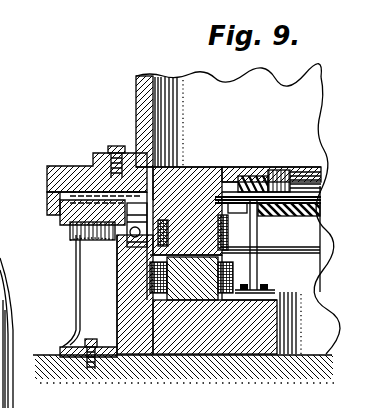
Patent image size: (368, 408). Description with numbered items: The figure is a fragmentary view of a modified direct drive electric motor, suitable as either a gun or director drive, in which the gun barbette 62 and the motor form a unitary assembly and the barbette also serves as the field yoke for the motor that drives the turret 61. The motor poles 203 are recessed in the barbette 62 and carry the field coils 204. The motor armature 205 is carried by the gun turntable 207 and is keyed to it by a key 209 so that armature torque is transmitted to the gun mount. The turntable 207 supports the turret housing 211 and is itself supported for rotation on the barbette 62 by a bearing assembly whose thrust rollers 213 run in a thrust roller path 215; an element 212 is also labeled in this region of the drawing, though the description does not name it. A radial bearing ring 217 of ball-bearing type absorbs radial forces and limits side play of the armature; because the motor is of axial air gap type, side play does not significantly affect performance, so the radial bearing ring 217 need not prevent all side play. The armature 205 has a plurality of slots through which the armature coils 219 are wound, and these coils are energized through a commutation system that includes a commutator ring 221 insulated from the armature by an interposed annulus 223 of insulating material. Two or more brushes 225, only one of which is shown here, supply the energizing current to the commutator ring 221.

The turret 61 is at (90, 109).
The gun barbette 62 is at (115, 294).
The motor poles 203 is at (150, 302).
The field coils 204 is at (240, 273).
The motor armature 205 is at (217, 170).
The gun turntable 207 is at (68, 168).
The key 209 is at (165, 167).
The turret housing 211 is at (143, 124).
The ball bearing 212 is at (127, 232).
The thrust rollers 213 is at (75, 226).
The thrust roller path 215 is at (55, 198).
The radial bearing ring 217 is at (123, 242).
The armature coils 219 is at (165, 248).
The commutator ring 221 is at (291, 217).
The annulus of insulating material 223 is at (258, 200).
The brushes 225 is at (257, 239).